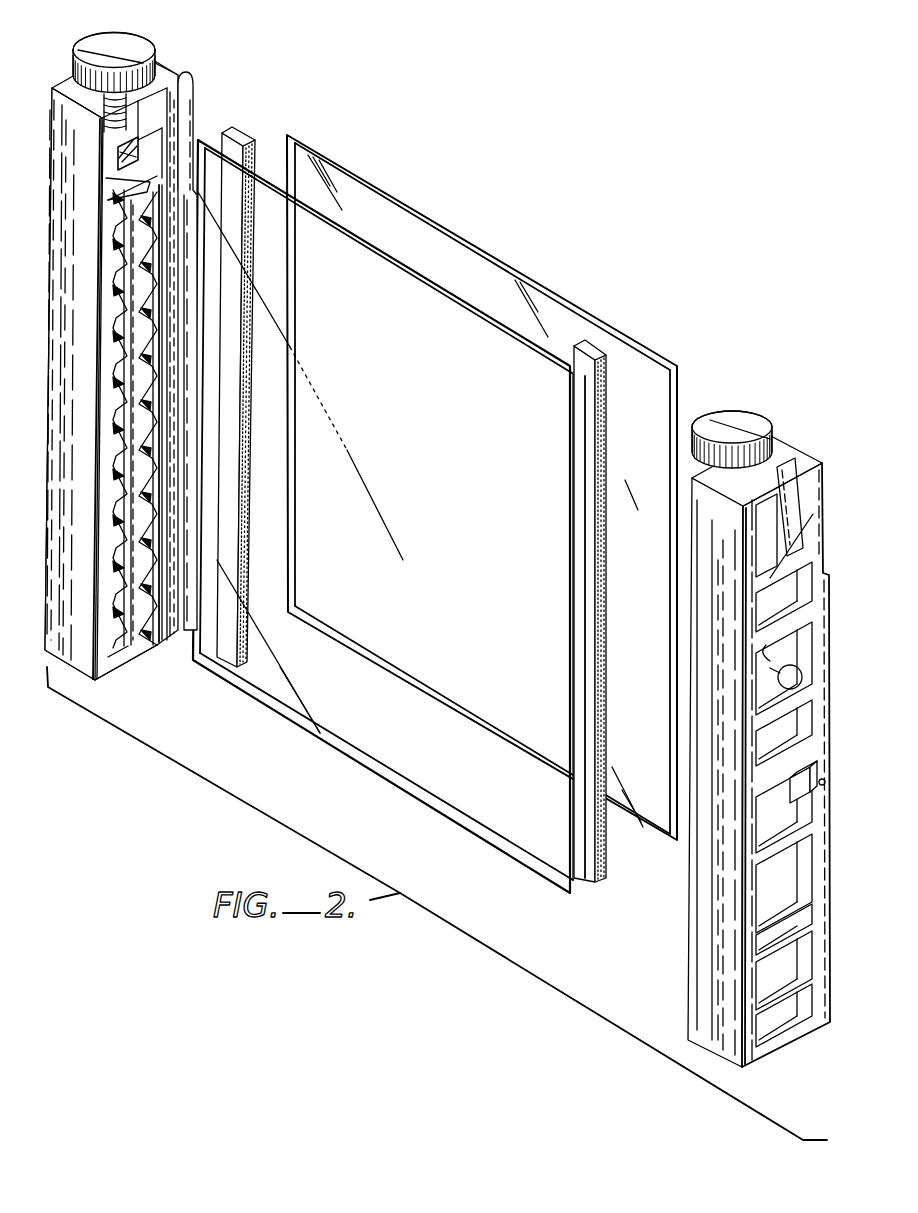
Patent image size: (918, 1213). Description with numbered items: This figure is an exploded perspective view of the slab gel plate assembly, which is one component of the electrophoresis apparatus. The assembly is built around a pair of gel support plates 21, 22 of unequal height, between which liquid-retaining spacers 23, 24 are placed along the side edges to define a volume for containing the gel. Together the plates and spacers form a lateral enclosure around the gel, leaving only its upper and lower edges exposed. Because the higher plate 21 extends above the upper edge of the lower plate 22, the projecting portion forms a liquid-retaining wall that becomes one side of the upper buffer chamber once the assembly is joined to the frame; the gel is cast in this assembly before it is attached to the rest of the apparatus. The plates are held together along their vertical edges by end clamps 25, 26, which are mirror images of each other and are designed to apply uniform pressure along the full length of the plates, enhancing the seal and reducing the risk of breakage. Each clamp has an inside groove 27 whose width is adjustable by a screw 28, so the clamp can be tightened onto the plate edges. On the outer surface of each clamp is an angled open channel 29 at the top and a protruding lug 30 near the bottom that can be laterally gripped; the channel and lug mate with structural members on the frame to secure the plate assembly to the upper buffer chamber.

The gel support plate 21 is at (407, 375).
The gel support plate 22 is at (492, 299).
The liquid-retaining spacer 23 is at (240, 135).
The liquid-retaining spacer 24 is at (600, 357).
The end clamp 25 is at (67, 291).
The end clamp 26 is at (709, 646).
The inside groove 27 is at (183, 140).
The screw 28 is at (127, 63).
The angled open channel 29 is at (793, 463).
The protruding lug 30 is at (808, 798).